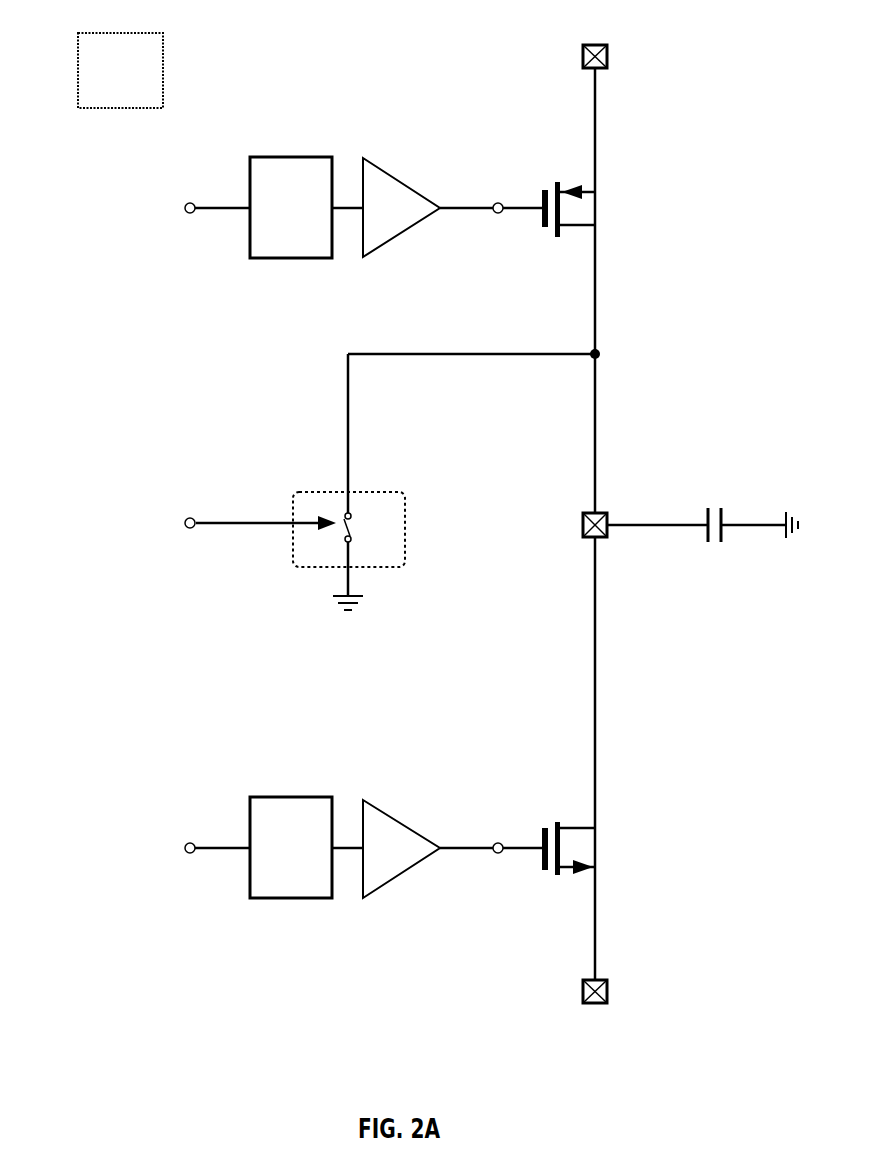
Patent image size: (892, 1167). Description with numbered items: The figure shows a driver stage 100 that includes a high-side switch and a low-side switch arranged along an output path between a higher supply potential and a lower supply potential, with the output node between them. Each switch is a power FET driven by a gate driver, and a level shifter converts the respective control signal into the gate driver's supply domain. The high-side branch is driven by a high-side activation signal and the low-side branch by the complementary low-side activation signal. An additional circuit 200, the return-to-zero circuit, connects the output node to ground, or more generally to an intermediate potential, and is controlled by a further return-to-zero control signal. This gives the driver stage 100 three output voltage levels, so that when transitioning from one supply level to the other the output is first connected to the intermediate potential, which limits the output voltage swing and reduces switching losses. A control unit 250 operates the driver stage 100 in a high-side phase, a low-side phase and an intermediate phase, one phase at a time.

The driver stage 100 is at (626, 126).
The additional circuit 200 is at (303, 490).
The control unit 250 is at (150, 67).